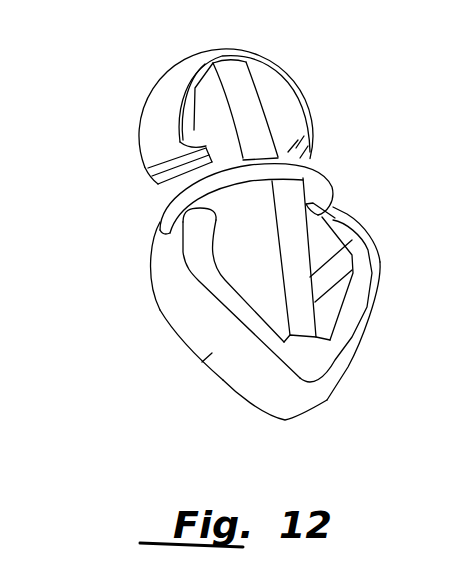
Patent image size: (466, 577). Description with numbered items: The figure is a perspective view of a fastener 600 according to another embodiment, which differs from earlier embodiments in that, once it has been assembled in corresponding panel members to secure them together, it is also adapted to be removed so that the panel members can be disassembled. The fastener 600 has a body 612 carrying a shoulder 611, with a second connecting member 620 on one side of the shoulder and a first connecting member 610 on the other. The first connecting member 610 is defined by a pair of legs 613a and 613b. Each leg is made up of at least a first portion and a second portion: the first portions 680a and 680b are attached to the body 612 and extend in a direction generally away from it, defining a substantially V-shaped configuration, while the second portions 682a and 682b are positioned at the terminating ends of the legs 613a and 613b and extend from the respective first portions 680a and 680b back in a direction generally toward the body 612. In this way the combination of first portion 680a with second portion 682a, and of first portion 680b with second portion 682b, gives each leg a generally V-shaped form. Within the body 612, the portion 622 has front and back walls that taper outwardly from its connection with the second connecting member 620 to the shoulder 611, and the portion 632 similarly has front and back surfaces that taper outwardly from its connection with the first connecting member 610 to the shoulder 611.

The fastener 600 is at (254, 239).
The second connecting member 620 is at (252, 98).
The portion 622 is at (287, 110).
The shoulder 611 is at (200, 199).
The body 612 is at (340, 236).
The second portion 682a is at (108, 266).
The second portion 682b is at (385, 244).
The portion 632 is at (379, 237).
The leg 613a is at (190, 293).
The leg 613b is at (376, 299).
The first portion 680a is at (165, 360).
The first portion 680b is at (379, 339).
The first connecting member 610 is at (255, 422).